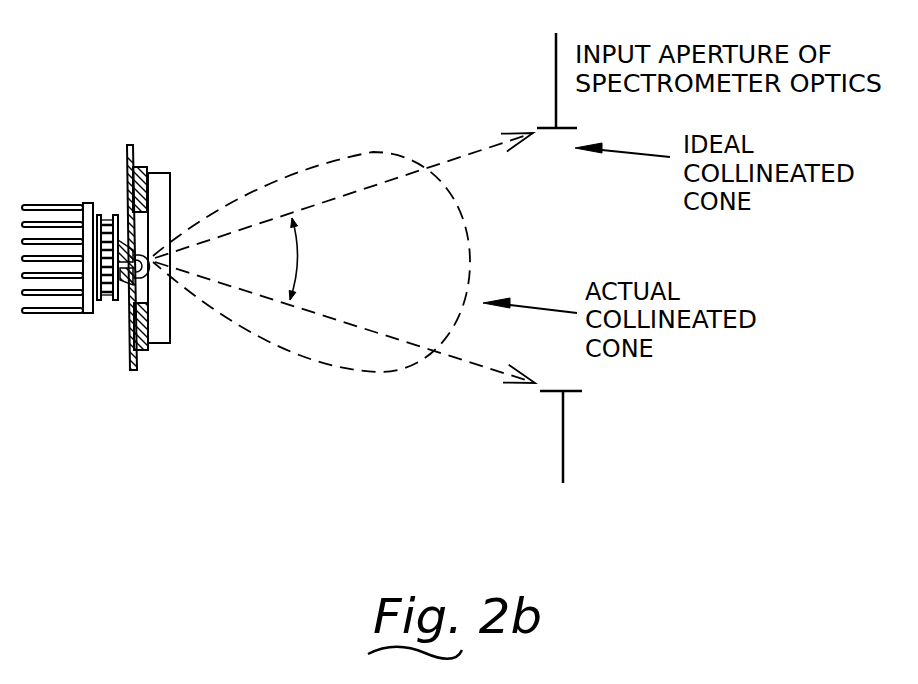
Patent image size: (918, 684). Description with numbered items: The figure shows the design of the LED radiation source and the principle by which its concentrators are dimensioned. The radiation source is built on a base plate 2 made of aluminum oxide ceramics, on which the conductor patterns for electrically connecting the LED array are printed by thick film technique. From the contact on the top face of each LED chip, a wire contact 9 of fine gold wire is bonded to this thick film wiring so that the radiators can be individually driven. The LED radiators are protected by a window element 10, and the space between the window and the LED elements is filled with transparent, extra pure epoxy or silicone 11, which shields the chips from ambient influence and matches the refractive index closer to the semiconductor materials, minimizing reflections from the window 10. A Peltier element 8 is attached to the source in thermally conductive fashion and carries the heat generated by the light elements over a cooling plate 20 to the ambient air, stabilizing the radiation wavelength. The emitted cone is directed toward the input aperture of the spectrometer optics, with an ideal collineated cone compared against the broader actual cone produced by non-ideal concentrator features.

The base plate 2 is at (134, 368).
The Peltier element 8 is at (110, 218).
The wire contact 9 is at (140, 285).
The window element 10 is at (147, 167).
The transparent epoxy or silicone 11 is at (172, 230).
The cooling plate 20 is at (32, 313).